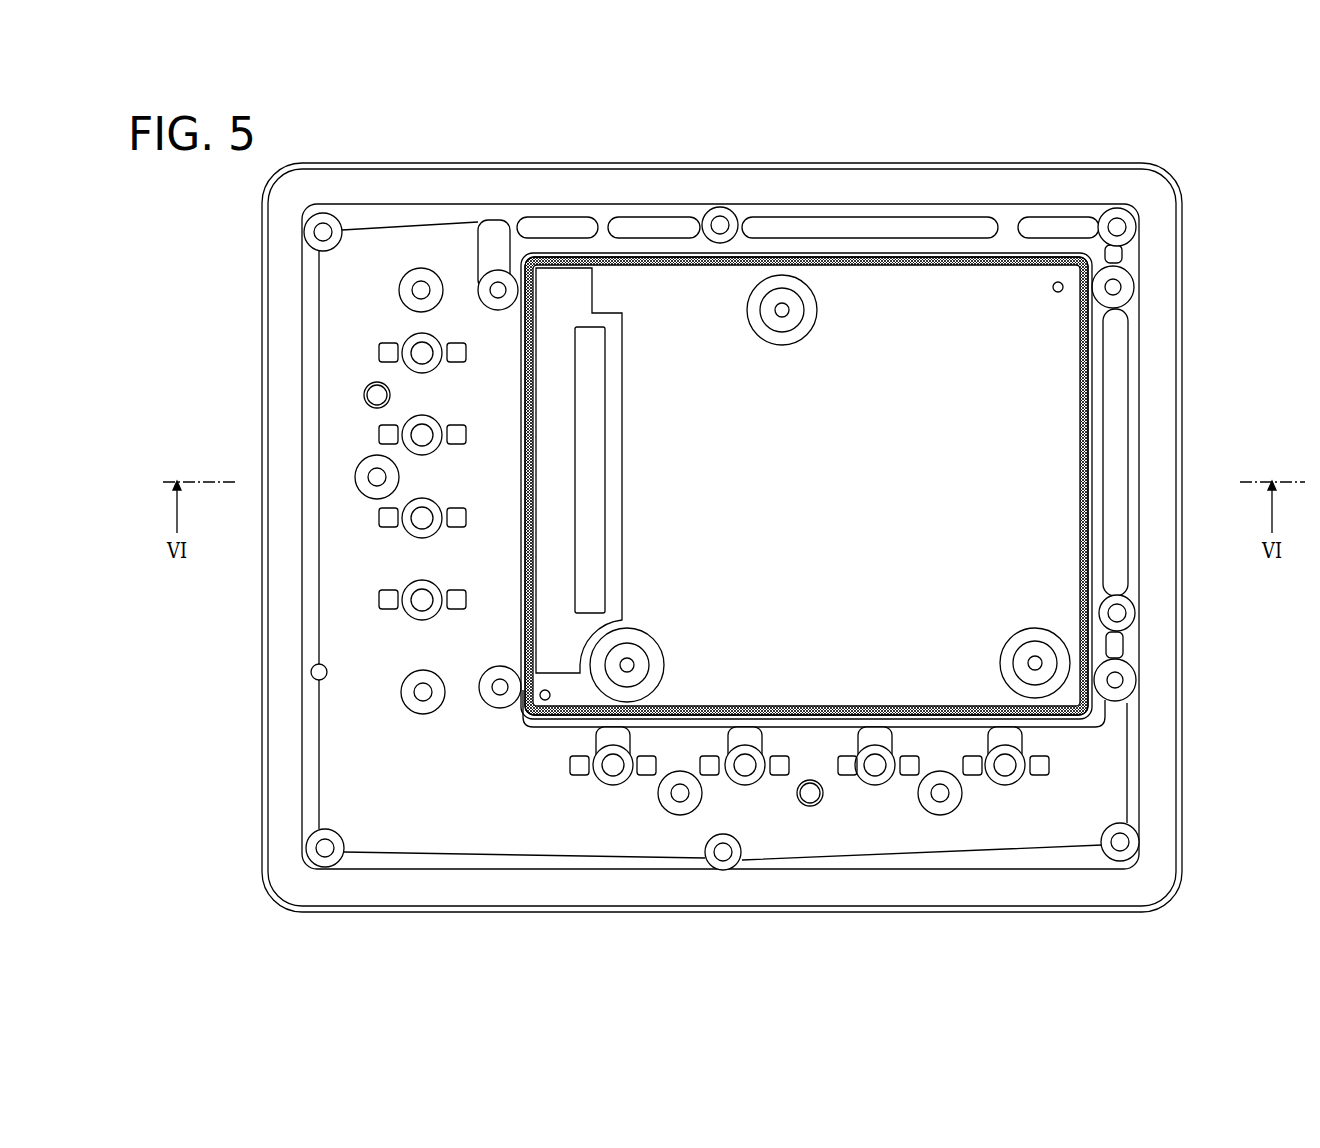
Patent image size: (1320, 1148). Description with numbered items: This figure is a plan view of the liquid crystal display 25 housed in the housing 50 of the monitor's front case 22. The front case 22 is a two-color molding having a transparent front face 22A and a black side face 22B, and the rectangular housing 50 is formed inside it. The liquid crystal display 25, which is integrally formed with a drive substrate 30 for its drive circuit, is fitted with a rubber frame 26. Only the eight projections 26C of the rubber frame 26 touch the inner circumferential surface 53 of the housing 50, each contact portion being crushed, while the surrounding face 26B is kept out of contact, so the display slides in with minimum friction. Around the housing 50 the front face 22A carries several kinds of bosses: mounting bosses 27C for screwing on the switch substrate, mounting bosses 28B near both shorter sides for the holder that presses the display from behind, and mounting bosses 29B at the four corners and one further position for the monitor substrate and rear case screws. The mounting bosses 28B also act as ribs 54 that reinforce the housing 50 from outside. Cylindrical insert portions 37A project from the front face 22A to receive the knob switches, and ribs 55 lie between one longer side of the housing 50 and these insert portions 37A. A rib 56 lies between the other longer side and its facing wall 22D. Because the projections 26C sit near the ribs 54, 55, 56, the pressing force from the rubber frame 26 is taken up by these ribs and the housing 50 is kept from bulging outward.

The front case 22 is at (851, 146).
The front face 22A is at (1098, 740).
The side face 22B is at (1183, 785).
The facing wall 22D is at (667, 208).
The liquid crystal display 25 is at (1058, 402).
The rubber frame 26 is at (1086, 500).
The surrounding face 26B is at (1100, 538).
The projection 26C is at (600, 256).
The mounting boss 27C is at (432, 273).
The mounting boss 28B is at (863, 443).
The rib 54 is at (492, 282).
The mounting boss 29B is at (1133, 223).
The drive substrate 30 is at (545, 480).
The insert portion 37A is at (426, 416).
The housing 50 is at (1097, 438).
The inner circumferential surface 53 is at (1073, 460).
The rib 55 is at (618, 740).
The rib 56 is at (612, 226).